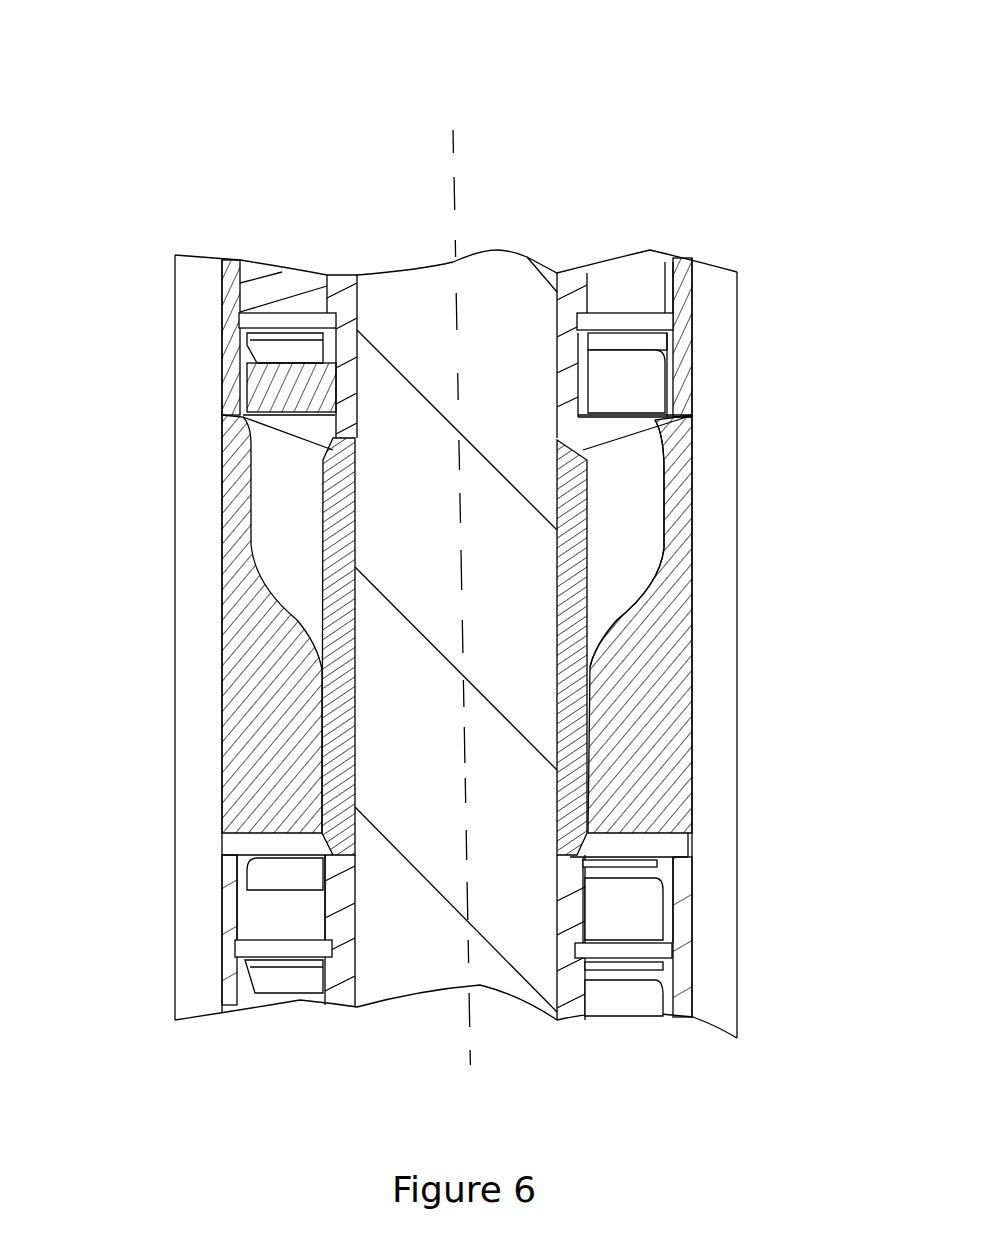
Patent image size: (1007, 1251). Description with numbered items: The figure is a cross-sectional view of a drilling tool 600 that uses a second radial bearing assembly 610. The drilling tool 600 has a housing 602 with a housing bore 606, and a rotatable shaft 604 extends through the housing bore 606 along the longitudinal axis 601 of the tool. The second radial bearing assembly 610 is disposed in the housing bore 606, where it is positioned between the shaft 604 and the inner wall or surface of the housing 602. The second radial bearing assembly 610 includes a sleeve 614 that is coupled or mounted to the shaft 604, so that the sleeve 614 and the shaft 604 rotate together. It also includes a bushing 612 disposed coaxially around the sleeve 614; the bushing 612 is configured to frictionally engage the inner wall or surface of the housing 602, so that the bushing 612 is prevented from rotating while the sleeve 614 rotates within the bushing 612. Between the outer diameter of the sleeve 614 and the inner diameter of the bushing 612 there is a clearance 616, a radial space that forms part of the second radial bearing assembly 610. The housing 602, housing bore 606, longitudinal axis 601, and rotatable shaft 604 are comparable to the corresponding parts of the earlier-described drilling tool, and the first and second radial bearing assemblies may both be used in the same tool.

The drilling tool 600 is at (68, 25).
The longitudinal axis 601 is at (487, 597).
The housing 602 is at (194, 349).
The rotatable shaft 604 is at (385, 993).
The housing bore 606 is at (281, 257).
The second radial bearing assembly 610 is at (143, 841).
The bushing 612 is at (683, 467).
The sleeve 614 is at (573, 765).
The clearance 616 is at (590, 667).